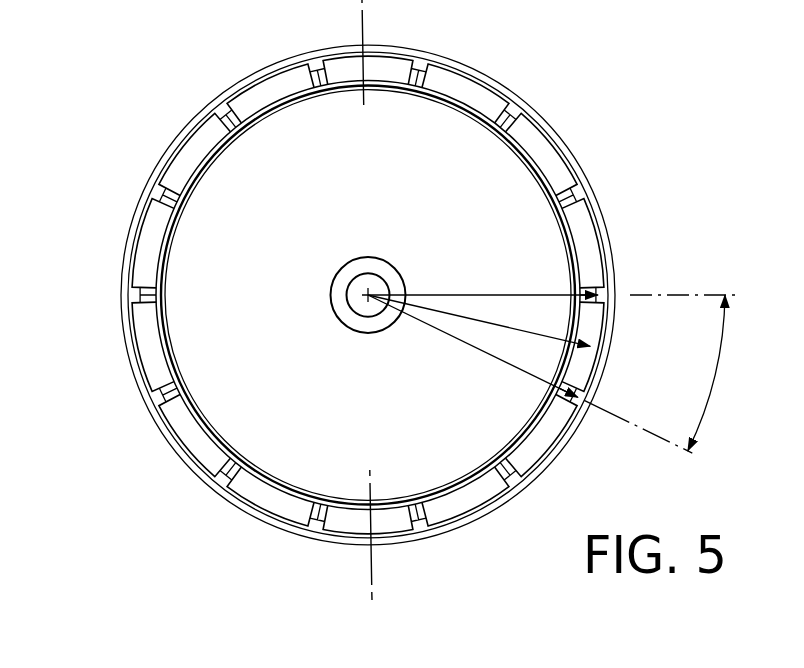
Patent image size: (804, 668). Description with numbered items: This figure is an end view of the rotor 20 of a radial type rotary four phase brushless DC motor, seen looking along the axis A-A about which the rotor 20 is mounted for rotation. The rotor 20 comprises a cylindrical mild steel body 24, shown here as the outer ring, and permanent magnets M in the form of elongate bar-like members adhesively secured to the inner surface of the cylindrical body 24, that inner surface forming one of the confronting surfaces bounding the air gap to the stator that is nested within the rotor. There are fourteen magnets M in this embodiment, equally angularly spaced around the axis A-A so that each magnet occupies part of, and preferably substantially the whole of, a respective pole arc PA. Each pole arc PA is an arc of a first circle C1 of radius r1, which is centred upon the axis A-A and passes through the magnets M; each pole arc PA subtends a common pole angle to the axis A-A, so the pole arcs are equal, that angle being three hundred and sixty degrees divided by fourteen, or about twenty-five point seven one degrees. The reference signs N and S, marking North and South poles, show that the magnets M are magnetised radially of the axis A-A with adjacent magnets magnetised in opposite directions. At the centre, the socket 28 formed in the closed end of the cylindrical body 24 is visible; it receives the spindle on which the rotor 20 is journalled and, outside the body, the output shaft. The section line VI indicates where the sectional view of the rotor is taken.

The rotor 20 is at (172, 471).
The cylindrical mild steel body 24 is at (595, 212).
The socket 28 is at (338, 264).
The permanent magnets M is at (258, 92).
The North pole N is at (487, 89).
The South pole S is at (470, 113).
The pole arc PA is at (600, 300).
The first circle C1 is at (583, 382).
The radius of the first circle r1 is at (479, 320).
The axis of rotation A-A is at (368, 295).
The section line VI is at (364, 24).